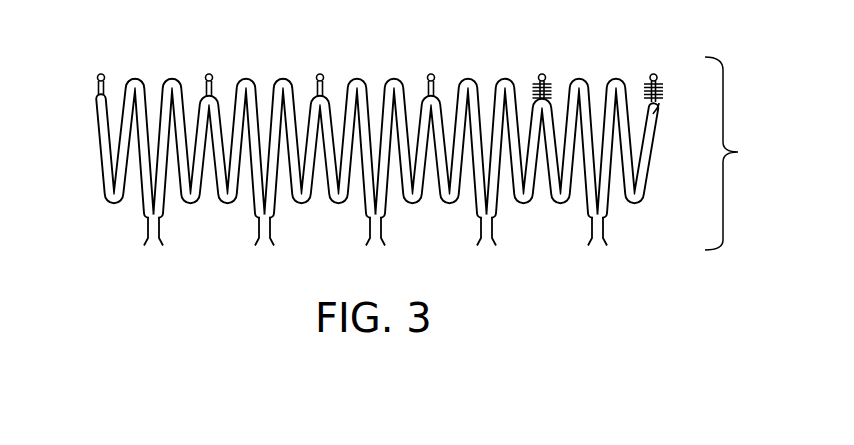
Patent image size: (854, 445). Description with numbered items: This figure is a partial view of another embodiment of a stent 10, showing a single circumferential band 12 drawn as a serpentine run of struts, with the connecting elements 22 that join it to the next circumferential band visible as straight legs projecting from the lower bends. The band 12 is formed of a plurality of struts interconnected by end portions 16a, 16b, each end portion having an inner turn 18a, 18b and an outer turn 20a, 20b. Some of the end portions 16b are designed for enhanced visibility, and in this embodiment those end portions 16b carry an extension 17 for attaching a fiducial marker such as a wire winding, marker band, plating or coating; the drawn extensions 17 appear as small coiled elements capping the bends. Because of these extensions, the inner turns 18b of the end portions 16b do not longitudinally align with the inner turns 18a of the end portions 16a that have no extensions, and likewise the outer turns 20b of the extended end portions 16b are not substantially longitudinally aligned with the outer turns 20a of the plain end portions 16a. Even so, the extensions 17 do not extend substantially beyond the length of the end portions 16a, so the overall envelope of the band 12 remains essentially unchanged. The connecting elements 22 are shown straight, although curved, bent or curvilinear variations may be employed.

The stent 10 is at (560, 251).
The circumferential band 12 is at (741, 153).
The end portion 16a is at (134, 80).
The end portion 16b is at (329, 97).
The extension 17 is at (664, 78).
The inner turn 18a is at (131, 92).
The inner turn 18b is at (428, 86).
The outer turn 20a is at (176, 79).
The outer turn 20b is at (312, 97).
The connecting element 22 is at (273, 239).